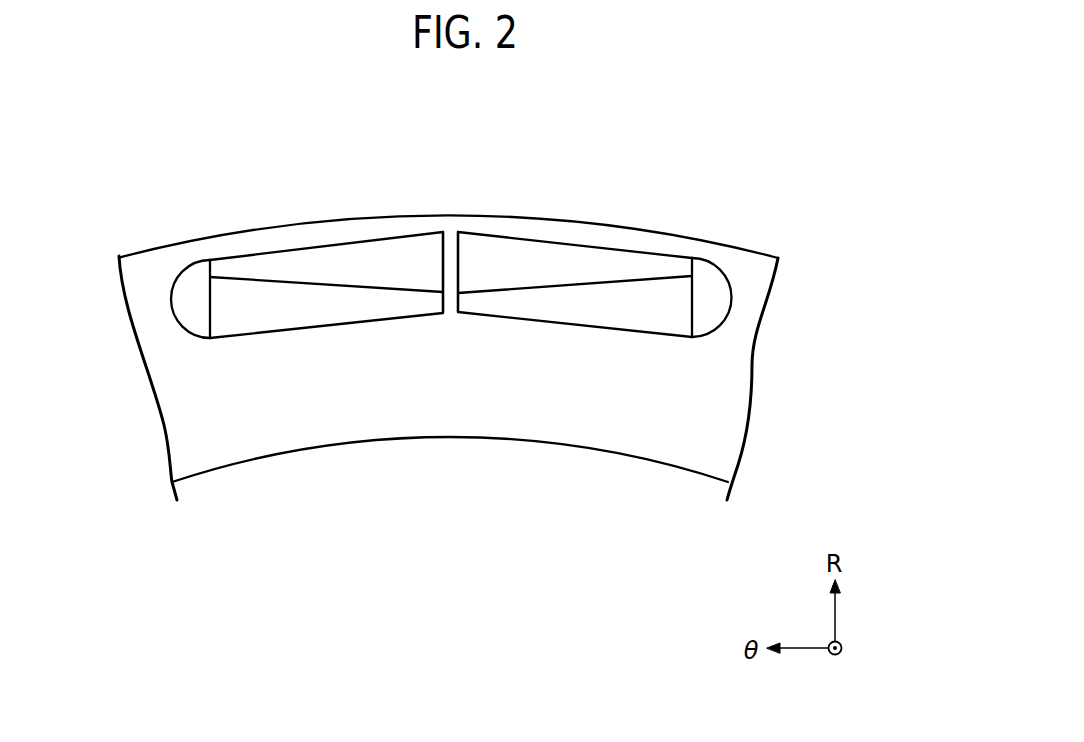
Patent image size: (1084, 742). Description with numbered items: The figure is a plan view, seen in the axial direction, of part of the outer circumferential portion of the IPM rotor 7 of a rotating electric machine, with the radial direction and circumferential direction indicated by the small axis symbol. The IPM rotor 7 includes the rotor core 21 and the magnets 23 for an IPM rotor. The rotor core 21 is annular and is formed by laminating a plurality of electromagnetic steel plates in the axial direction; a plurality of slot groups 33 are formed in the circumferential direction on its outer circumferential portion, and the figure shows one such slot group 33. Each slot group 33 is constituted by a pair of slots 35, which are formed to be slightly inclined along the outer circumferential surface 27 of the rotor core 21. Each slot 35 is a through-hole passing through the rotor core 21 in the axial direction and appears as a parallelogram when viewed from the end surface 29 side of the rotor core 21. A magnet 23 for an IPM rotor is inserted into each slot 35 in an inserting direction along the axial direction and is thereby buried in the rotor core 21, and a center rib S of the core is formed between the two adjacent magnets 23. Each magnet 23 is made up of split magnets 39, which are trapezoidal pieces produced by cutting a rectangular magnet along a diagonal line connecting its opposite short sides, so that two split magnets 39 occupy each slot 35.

The IPM rotor 7 is at (648, 189).
The rotor core 21 is at (635, 462).
The magnet for an IPM rotor 23 is at (130, 155).
The outer circumferential surface 27 is at (437, 216).
The end surface 29 is at (272, 433).
The slot group 33 is at (398, 523).
The slot 35 is at (363, 321).
The split magnet 39 is at (222, 308).
The center rib S is at (450, 236).